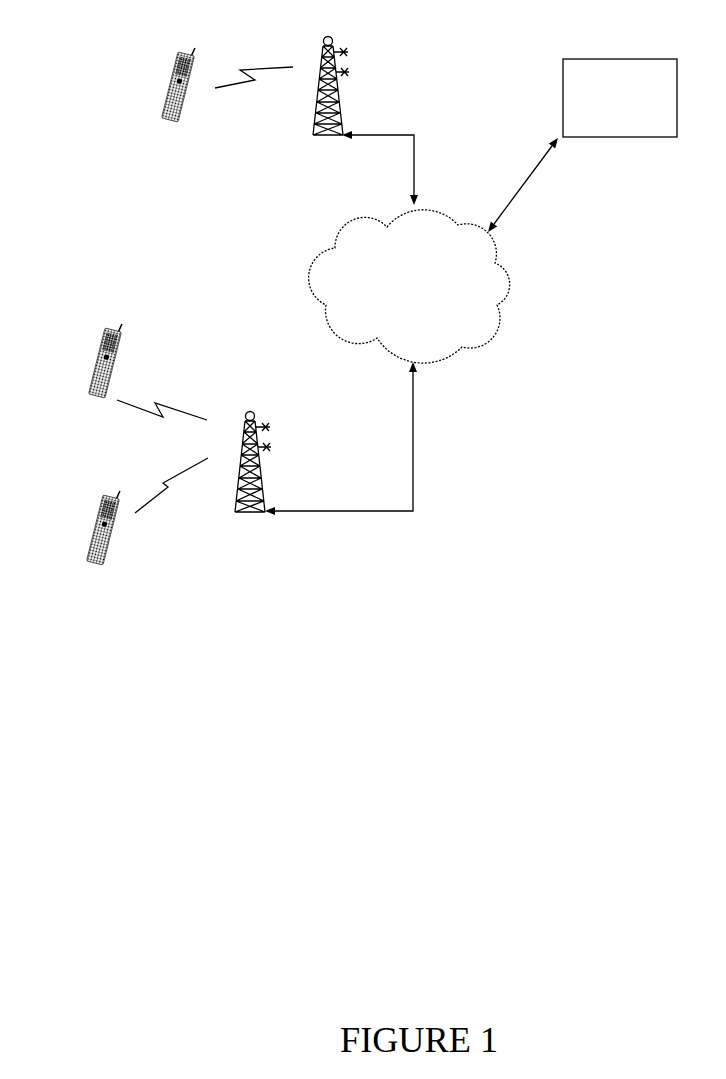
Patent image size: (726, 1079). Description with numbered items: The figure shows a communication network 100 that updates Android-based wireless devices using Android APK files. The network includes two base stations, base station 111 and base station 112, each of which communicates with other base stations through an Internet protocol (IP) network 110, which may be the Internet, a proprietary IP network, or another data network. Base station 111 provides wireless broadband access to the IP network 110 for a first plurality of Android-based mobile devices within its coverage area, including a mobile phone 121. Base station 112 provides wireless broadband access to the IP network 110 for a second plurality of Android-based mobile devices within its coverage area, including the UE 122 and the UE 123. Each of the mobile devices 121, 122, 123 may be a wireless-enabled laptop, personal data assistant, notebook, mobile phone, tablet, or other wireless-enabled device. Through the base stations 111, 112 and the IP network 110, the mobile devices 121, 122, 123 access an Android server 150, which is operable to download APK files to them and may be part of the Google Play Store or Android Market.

The communication network 100 is at (112, 759).
The Internet protocol (IP) network 110 is at (507, 288).
The base station 111 is at (330, 36).
The base station 112 is at (250, 410).
The mobile phone 121 is at (182, 121).
The UE 122 is at (87, 387).
The UE 123 is at (105, 565).
The Android server 150 is at (620, 98).